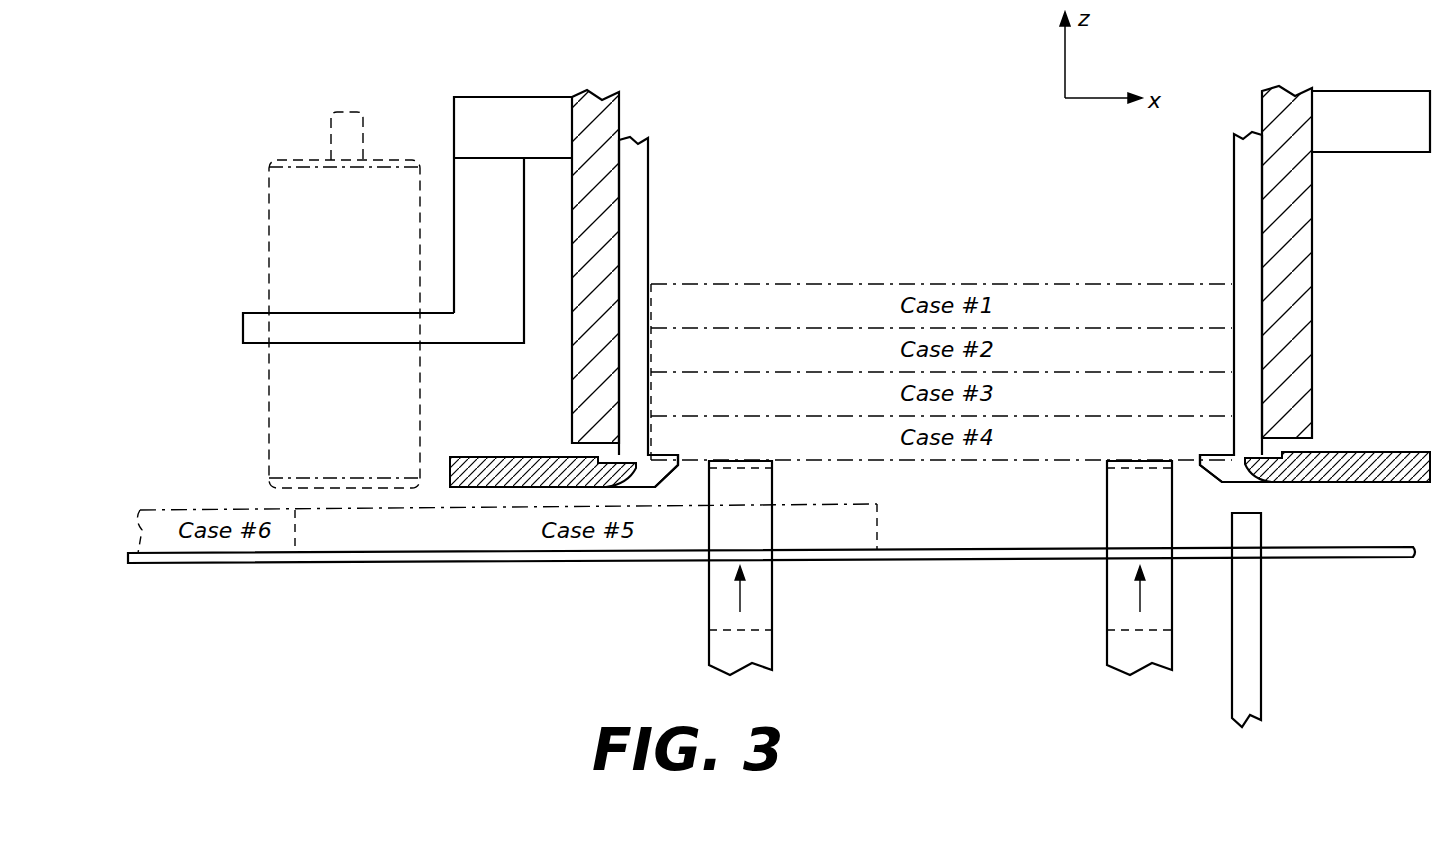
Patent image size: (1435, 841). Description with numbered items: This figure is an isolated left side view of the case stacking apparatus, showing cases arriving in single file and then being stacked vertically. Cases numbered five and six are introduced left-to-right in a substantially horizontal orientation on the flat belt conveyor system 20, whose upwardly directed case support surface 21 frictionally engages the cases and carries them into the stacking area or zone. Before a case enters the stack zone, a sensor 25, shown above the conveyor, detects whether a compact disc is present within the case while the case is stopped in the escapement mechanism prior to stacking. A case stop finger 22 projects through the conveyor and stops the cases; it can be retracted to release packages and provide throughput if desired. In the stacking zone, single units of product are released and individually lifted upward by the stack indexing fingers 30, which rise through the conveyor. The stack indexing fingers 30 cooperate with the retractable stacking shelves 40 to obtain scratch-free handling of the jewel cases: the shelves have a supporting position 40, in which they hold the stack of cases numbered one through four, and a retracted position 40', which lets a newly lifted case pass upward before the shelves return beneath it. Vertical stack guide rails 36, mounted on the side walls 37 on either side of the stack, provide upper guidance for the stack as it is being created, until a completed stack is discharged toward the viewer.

The flat belt conveyor system 20 is at (920, 552).
The conveyor belt surface 21 is at (955, 548).
The case stop finger 22 is at (1252, 589).
The sensor 25 is at (299, 269).
The stack indexing fingers 30 is at (762, 598).
The vertical stack guide rails 36 is at (650, 244).
The side wall 37 is at (622, 111).
The stacking shelves 40 is at (954, 532).
The stacking shelves retracted position 40' is at (940, 430).